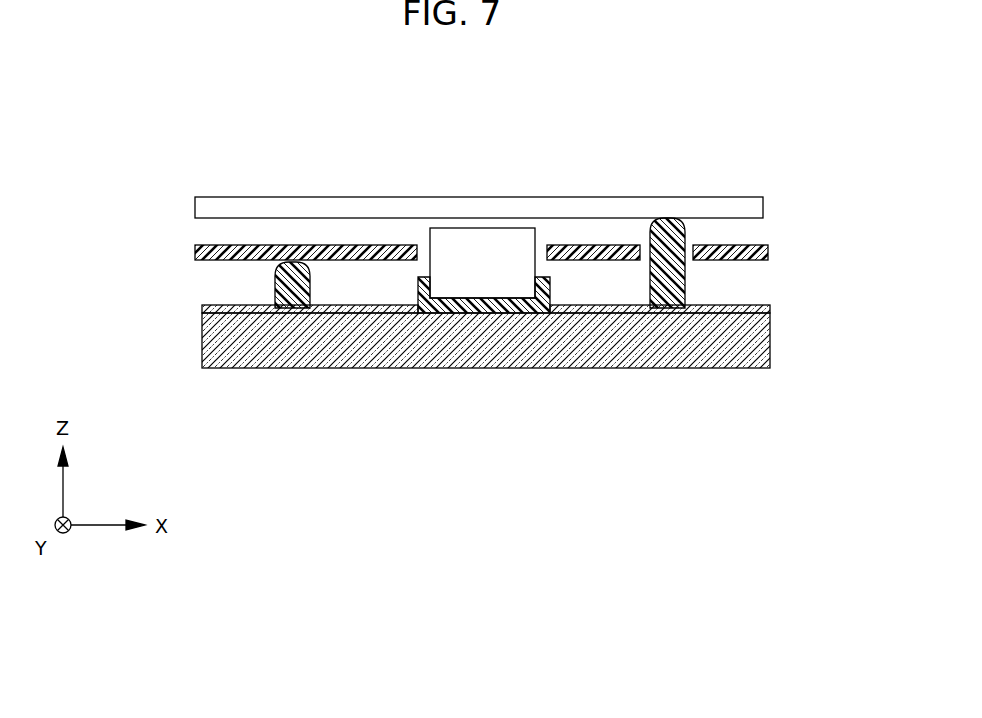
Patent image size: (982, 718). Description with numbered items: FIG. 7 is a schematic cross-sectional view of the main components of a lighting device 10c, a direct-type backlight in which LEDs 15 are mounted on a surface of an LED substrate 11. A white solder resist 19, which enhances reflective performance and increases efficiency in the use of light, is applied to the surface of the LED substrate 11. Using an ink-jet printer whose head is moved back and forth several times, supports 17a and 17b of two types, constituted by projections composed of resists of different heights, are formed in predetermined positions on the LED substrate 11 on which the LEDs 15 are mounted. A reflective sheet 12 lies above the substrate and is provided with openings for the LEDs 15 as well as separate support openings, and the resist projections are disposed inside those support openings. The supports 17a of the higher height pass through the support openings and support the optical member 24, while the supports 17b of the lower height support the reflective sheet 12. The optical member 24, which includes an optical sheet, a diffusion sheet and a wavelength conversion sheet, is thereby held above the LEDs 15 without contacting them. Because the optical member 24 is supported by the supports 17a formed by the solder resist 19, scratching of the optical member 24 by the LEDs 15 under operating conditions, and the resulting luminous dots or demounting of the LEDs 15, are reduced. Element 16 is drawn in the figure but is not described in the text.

The lighting device 10c is at (779, 124).
The LED substrate 11 is at (202, 338).
The reflective sheet 12 is at (398, 252).
The LED 15 is at (477, 243).
The bonding layer 16 is at (478, 315).
The support 17a is at (677, 219).
The support 17b is at (292, 262).
The white solder resist 19 is at (708, 307).
The optical member 24 is at (195, 210).